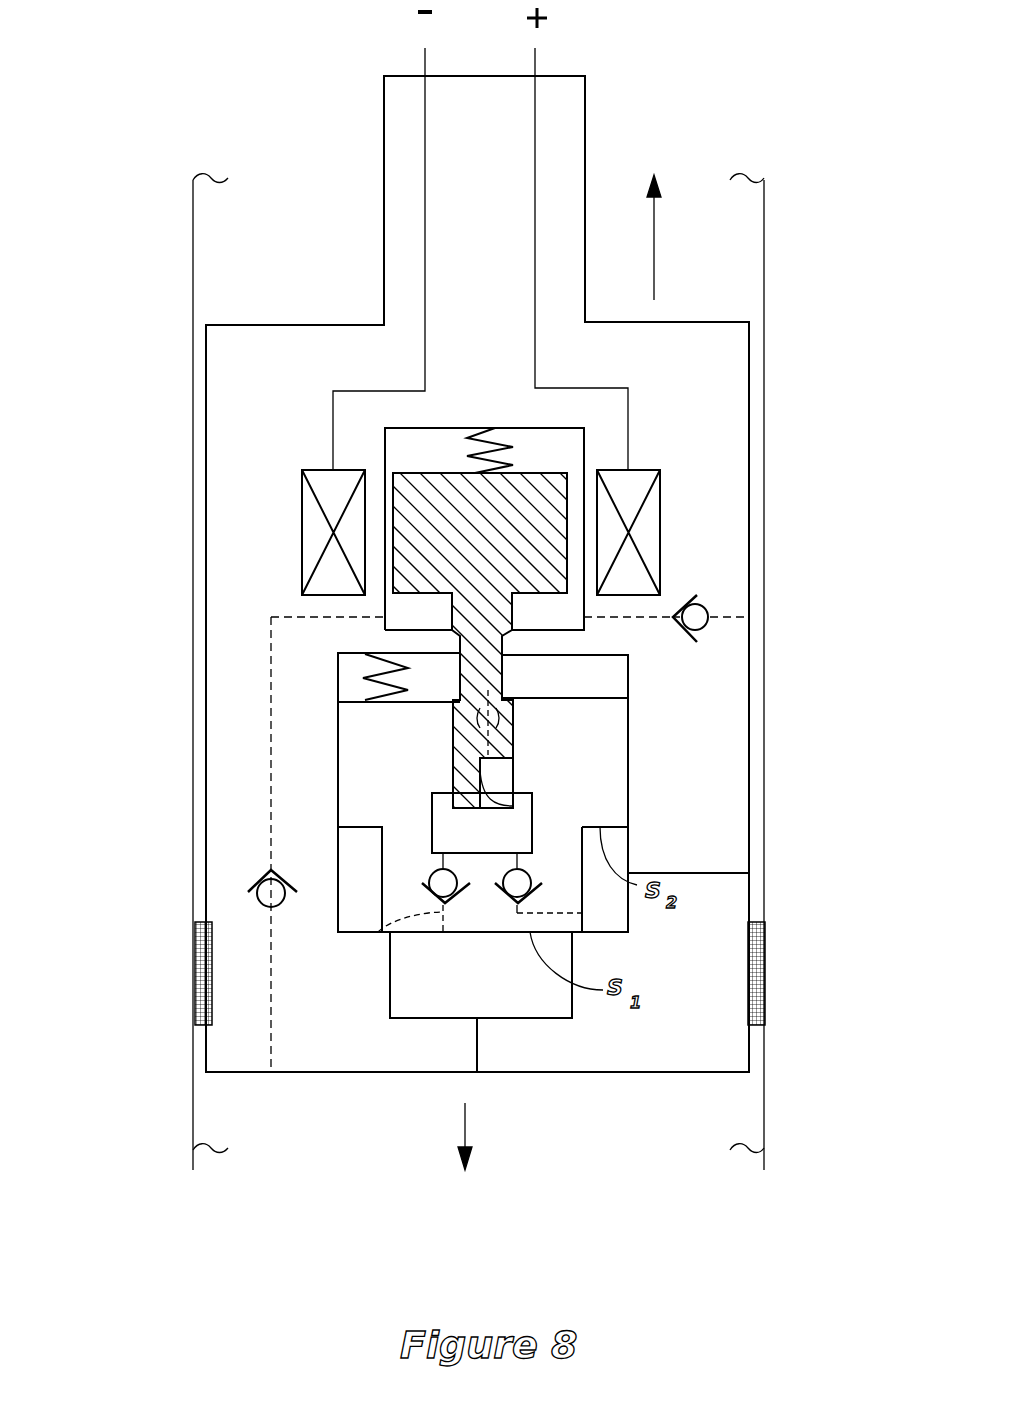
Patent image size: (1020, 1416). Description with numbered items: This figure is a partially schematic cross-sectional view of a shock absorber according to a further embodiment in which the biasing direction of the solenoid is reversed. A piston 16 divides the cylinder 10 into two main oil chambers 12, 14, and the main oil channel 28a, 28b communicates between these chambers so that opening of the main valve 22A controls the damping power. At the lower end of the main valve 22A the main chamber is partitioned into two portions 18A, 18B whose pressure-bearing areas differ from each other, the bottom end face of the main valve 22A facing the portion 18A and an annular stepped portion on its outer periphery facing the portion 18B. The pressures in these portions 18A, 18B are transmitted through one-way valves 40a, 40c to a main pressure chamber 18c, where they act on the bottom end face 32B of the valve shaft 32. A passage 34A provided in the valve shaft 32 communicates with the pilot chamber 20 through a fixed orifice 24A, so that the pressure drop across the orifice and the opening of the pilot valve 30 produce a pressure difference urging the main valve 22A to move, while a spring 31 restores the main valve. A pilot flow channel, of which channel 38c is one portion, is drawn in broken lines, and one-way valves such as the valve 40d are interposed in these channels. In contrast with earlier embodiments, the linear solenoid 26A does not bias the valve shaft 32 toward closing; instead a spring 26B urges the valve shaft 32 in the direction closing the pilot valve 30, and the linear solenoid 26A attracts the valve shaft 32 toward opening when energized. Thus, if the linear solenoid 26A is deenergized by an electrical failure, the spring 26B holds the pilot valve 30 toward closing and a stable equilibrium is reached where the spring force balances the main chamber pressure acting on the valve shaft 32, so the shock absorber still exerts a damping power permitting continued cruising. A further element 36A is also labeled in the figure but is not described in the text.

The cylinder 10 is at (763, 262).
The main oil chamber 12 is at (325, 247).
The main oil chamber 14 is at (295, 1205).
The piston 16 is at (749, 344).
The main chamber portion 18A is at (510, 1018).
The main chamber portion 18B is at (628, 922).
The main pressure chamber 18c is at (433, 807).
The pilot chamber 20 is at (348, 678).
The main valve 22A is at (585, 698).
The fixed orifice 24A is at (508, 717).
The linear solenoid 26A is at (506, 426).
The spring 26B is at (552, 445).
The main oil channel 28a is at (713, 873).
The main oil channel 28b is at (477, 1043).
The pilot valve 30 is at (438, 622).
The spring 31 is at (368, 655).
The valve shaft 32 is at (453, 730).
The bottom end face of valve shaft 32B is at (367, 940).
The passage 34A is at (513, 773).
The valve block 36A is at (527, 800).
The pilot flow channel 38c is at (555, 915).
The one-way valve 40a is at (440, 867).
The one-way valve 40c is at (500, 872).
The one-way valve 40d is at (260, 890).